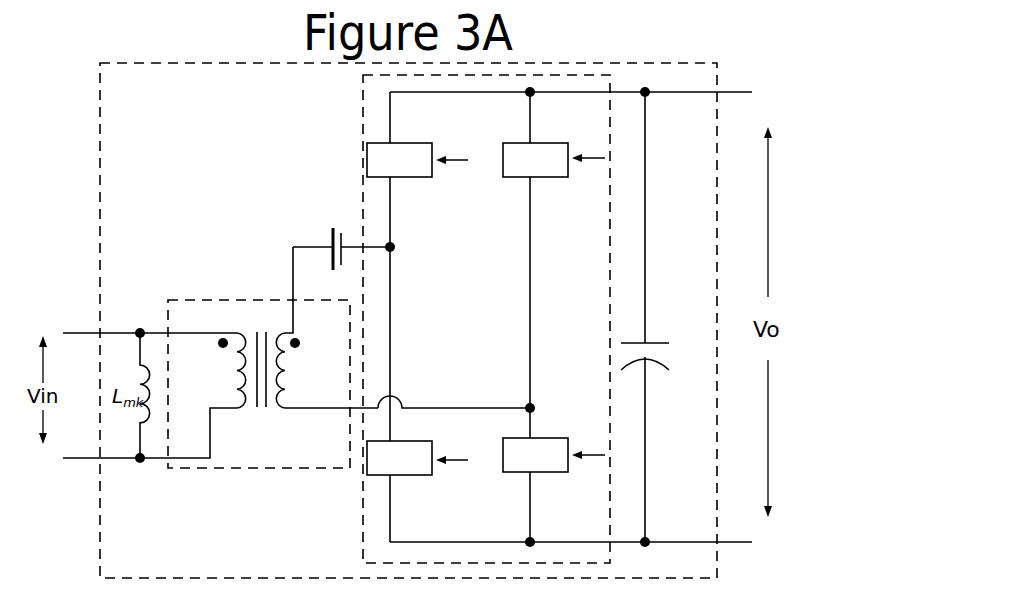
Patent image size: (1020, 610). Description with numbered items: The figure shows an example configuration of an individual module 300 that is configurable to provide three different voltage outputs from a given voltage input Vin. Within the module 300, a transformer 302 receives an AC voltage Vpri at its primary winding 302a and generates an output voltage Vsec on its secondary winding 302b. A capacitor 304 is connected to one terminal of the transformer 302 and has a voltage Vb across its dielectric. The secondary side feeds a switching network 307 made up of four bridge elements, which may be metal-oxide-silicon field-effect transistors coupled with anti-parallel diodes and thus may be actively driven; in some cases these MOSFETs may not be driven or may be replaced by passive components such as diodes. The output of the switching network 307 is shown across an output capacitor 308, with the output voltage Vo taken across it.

The module 300 is at (100, 150).
The transformer 302 is at (195, 301).
The primary winding 302a is at (237, 422).
The secondary winding 302b is at (283, 422).
The capacitor 304 is at (308, 220).
The switching network 307 is at (362, 122).
The output capacitor 308 is at (675, 310).